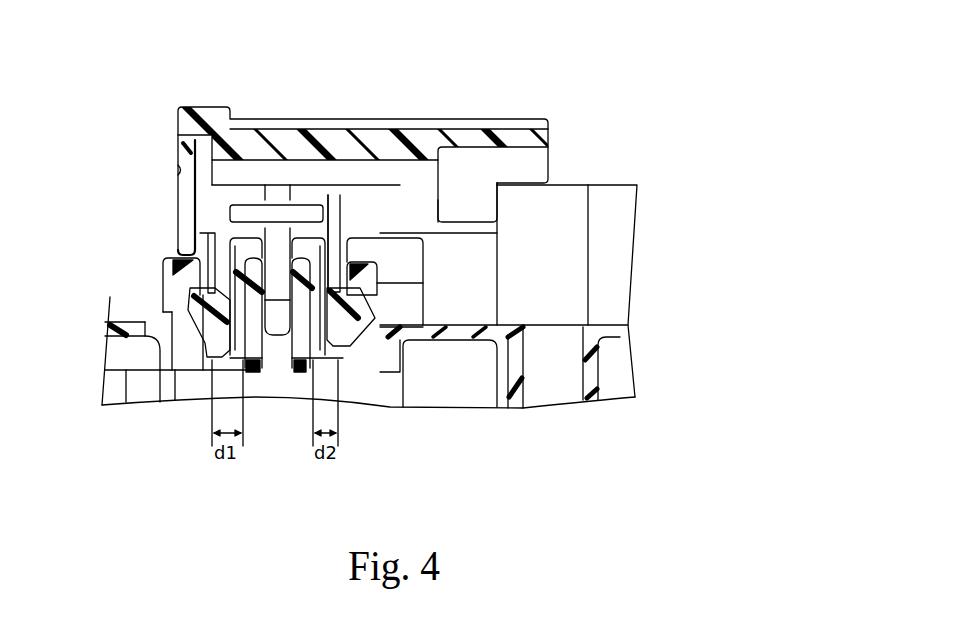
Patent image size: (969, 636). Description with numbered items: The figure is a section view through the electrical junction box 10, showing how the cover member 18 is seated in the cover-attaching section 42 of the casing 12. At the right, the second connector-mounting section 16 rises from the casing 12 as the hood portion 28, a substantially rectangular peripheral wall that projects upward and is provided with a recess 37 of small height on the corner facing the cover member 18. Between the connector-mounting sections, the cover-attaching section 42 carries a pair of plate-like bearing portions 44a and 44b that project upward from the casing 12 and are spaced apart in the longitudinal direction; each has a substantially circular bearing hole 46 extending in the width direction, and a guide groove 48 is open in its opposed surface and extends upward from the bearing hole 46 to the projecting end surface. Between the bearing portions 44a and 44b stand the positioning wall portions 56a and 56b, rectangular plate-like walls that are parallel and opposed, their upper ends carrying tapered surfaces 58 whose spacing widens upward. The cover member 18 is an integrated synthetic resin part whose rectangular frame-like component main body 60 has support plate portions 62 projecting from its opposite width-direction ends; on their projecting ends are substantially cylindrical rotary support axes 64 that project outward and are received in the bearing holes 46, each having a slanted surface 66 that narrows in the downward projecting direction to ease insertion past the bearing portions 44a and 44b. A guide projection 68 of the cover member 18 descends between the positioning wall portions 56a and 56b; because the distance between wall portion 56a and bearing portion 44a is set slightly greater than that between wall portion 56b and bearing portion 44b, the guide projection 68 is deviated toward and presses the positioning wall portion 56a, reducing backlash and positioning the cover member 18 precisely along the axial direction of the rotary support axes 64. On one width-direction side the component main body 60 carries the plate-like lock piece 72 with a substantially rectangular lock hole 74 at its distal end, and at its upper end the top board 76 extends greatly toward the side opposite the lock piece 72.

The electrical junction box 10 is at (606, 43).
The casing 12 is at (627, 333).
The second connector-mounting section 16 is at (632, 166).
The cover member 18 is at (212, 80).
The hood portion 28 is at (617, 237).
The recess 37 is at (487, 227).
The cover-attaching section 42 is at (151, 251).
The bearing portion 44a is at (188, 287).
The bearing portion 44b is at (370, 281).
The bearing hole 46 is at (178, 312).
The guide groove 48 is at (348, 272).
The positioning wall portion 56a is at (250, 330).
The positioning wall portion 56b is at (297, 330).
The tapered surface 58 is at (258, 262).
The component main body 60 is at (272, 198).
The support plate portion 62 is at (336, 258).
The rotary support axis 64 is at (194, 316).
The slanted surface 66 is at (188, 327).
The guide projection 68 is at (277, 305).
The lock piece 72 is at (183, 152).
The lock hole 74 is at (188, 172).
The top board 76 is at (424, 140).